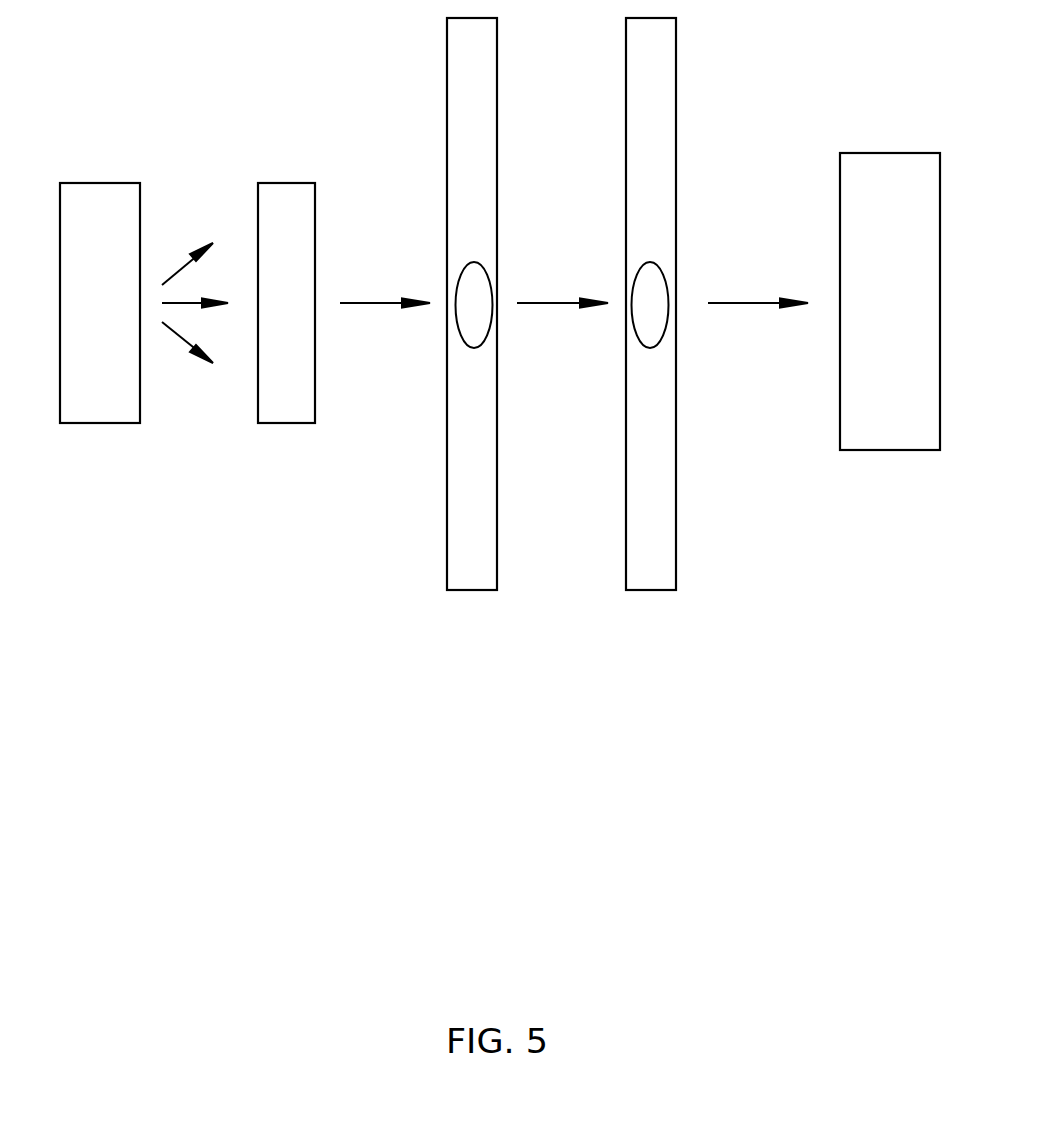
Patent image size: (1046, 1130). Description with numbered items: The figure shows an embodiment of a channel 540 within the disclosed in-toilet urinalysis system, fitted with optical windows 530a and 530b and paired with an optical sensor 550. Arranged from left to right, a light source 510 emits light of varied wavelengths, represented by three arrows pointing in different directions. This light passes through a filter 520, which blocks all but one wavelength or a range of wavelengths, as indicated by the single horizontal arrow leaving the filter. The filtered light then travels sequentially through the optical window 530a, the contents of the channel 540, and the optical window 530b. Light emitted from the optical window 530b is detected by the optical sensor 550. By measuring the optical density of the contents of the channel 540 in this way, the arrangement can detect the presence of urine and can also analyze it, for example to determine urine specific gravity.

The light source 510 is at (98, 423).
The filter 520 is at (283, 423).
The optical window 530a is at (467, 262).
The optical window 530b is at (652, 264).
The channel 540 is at (468, 590).
The optical sensor 550 is at (892, 450).